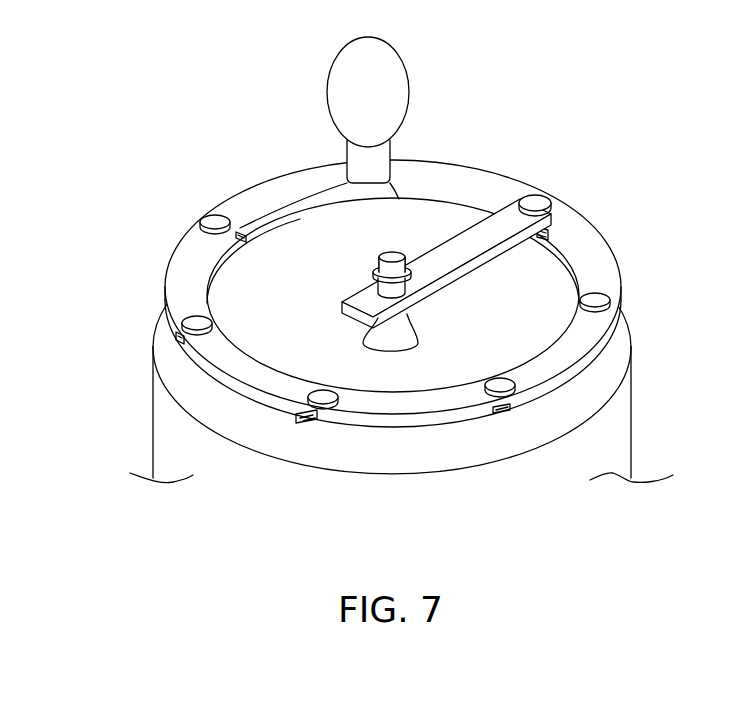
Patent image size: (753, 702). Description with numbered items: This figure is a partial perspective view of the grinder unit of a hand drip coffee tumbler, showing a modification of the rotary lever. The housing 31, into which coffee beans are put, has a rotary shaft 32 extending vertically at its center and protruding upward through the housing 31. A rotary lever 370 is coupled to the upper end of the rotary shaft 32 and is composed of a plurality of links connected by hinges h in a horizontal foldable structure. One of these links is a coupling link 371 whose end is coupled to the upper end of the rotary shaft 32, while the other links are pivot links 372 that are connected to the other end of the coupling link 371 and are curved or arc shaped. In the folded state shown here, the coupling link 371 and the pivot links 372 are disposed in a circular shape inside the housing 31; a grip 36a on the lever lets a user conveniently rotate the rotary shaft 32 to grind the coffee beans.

The housing 31 is at (165, 415).
The rotary shaft 32 is at (388, 252).
The grip 36a is at (388, 82).
The rotary lever 370 is at (416, 244).
The coupling link 371 is at (505, 217).
The pivot link 372 is at (580, 245).
The hinge h is at (598, 293).